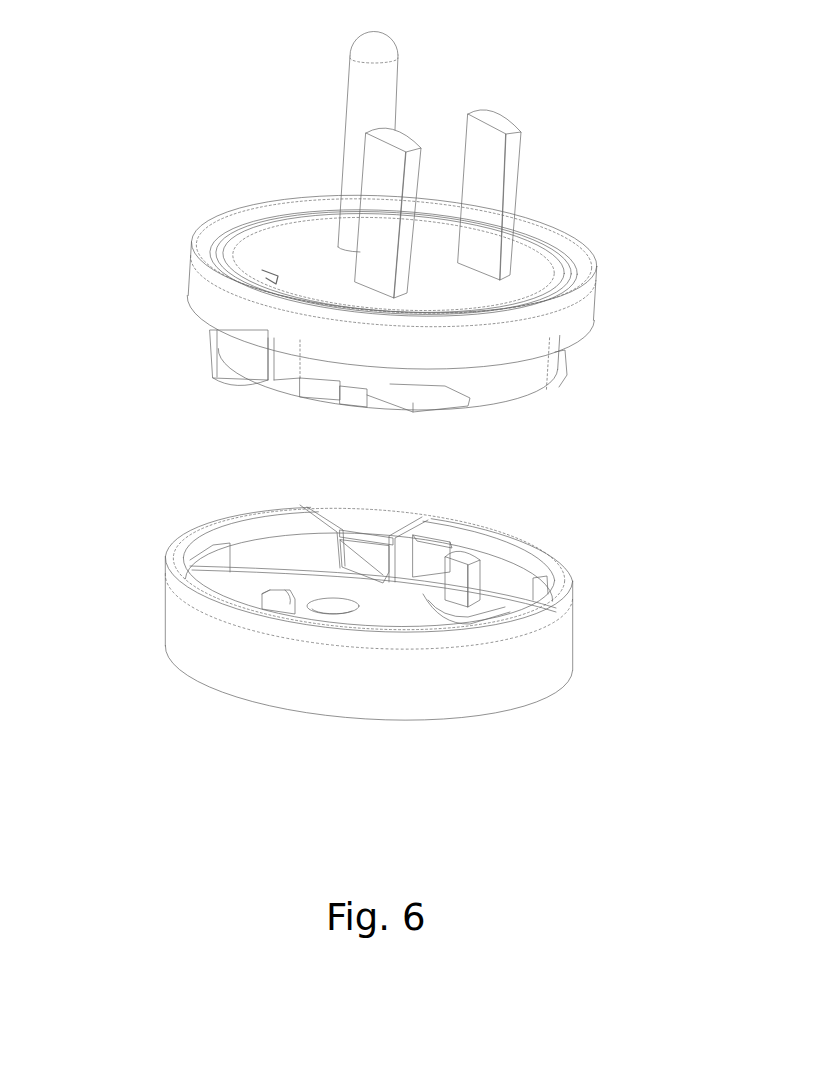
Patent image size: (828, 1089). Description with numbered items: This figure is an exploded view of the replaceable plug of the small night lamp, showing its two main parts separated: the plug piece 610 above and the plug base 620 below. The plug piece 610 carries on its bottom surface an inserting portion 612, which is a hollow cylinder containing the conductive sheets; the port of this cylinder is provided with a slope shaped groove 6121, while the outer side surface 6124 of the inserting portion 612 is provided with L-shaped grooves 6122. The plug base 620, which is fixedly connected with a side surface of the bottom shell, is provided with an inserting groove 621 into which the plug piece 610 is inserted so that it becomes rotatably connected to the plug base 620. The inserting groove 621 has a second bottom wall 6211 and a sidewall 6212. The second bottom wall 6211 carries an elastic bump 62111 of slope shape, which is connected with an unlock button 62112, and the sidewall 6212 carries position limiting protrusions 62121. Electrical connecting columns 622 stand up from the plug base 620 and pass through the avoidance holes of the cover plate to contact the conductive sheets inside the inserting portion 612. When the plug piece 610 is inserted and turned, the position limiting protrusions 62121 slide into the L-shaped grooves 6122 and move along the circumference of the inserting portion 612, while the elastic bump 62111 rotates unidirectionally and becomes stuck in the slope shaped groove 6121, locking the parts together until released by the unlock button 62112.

The plug piece 610 is at (372, 227).
The inserting portion 612 is at (543, 388).
The slope shaped groove 6121 is at (413, 403).
The L-shaped grooves 6122 is at (288, 375).
The outer side surface 6124 is at (247, 352).
The plug base 620 is at (369, 628).
The inserting groove 621 is at (257, 548).
The second bottom wall 6211 is at (380, 612).
The elastic bump 62111 is at (343, 568).
The unlock button 62112 is at (353, 532).
The position limiting protrusions 62121 is at (432, 545).
The electrical connecting columns 622 is at (457, 577).
The sidewall 6212 is at (503, 585).